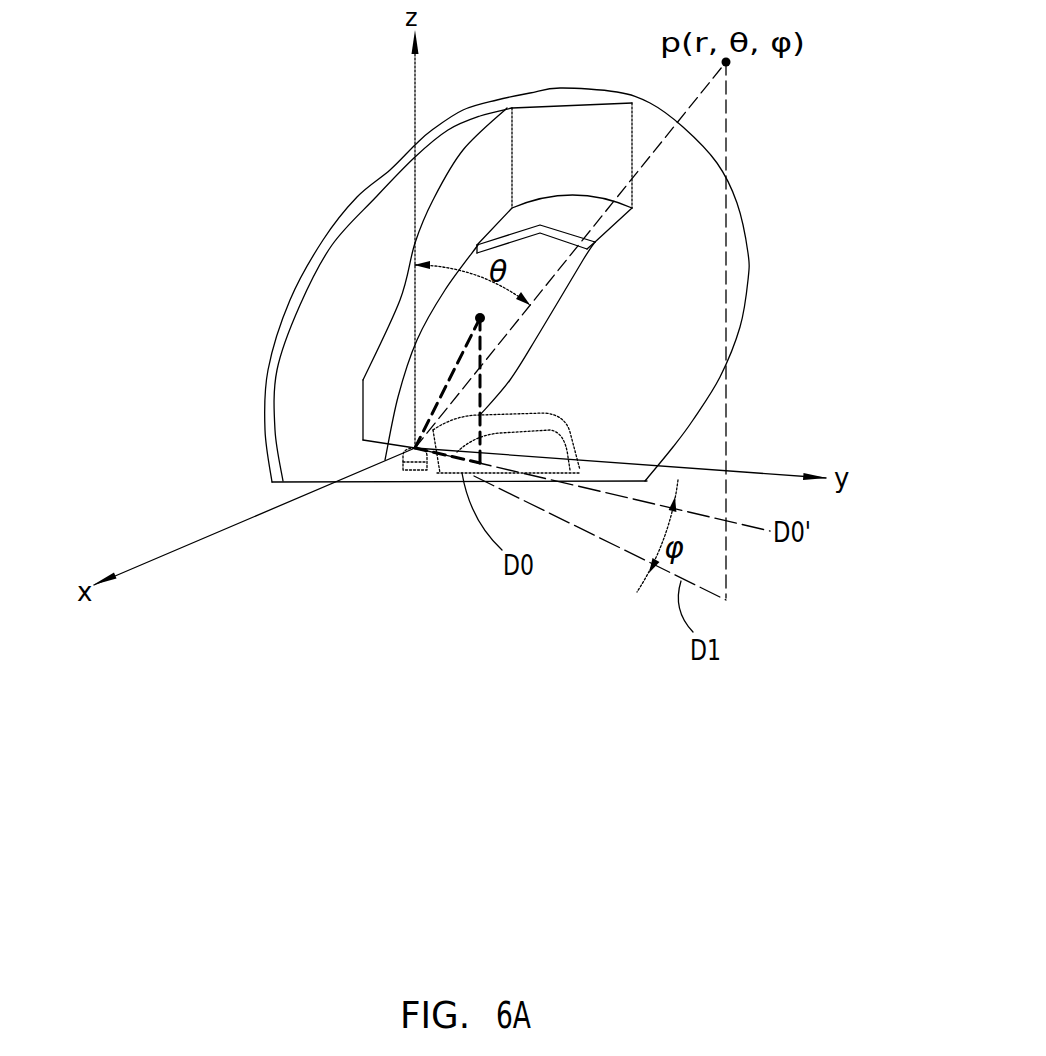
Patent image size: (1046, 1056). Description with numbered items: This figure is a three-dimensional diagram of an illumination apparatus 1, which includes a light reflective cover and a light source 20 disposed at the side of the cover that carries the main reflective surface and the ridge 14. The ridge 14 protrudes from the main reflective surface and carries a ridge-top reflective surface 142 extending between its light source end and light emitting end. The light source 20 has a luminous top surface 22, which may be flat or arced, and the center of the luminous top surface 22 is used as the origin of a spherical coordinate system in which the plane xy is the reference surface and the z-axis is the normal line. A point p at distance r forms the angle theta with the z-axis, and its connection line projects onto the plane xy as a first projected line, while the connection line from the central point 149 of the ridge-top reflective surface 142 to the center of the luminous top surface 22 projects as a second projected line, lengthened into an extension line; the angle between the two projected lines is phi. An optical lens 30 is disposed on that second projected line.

The illumination apparatus 1 is at (247, 73).
The ridge 14 is at (404, 302).
The ridge-top reflective surface 142 is at (538, 212).
The central point of the ridge-top reflective surface 149 is at (484, 319).
The optical lens 30 is at (576, 424).
The light source 20 is at (420, 474).
The luminous top surface 22 is at (402, 462).